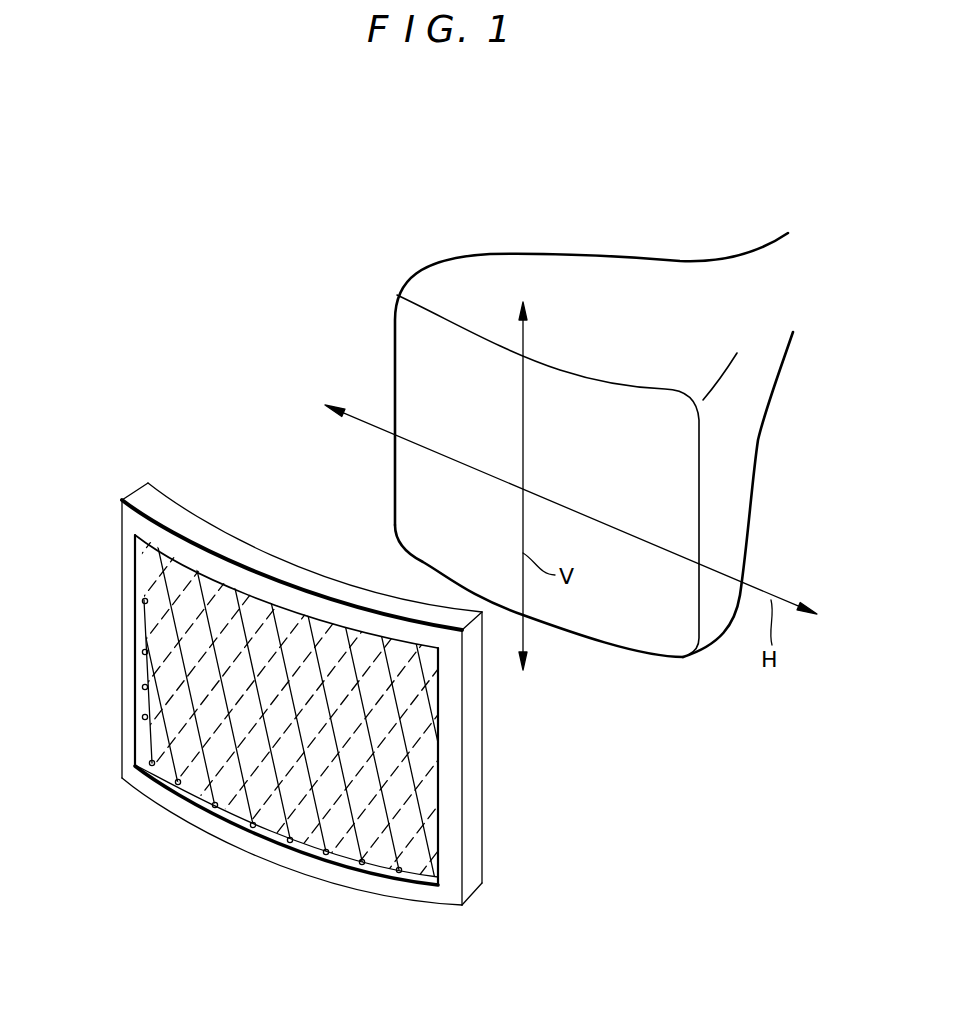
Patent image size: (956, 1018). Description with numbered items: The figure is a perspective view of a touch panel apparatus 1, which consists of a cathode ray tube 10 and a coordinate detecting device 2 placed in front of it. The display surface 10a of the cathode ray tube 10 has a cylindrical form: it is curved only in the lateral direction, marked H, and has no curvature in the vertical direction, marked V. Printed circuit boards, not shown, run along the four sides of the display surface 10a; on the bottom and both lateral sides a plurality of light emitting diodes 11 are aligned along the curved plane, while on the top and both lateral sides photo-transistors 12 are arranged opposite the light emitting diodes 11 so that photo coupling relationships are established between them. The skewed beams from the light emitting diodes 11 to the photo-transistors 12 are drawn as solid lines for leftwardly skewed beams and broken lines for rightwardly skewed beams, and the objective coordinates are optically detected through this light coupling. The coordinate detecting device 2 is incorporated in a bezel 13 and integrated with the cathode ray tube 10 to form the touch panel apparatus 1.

The touch panel apparatus 1 is at (252, 298).
The coordinate detecting device 2 is at (477, 828).
The cathode ray tube 10 is at (531, 257).
The display surface 10a is at (678, 521).
The light emitting diodes 11 is at (214, 808).
The photo-transistors 12 is at (143, 600).
The bezel 13 is at (295, 580).